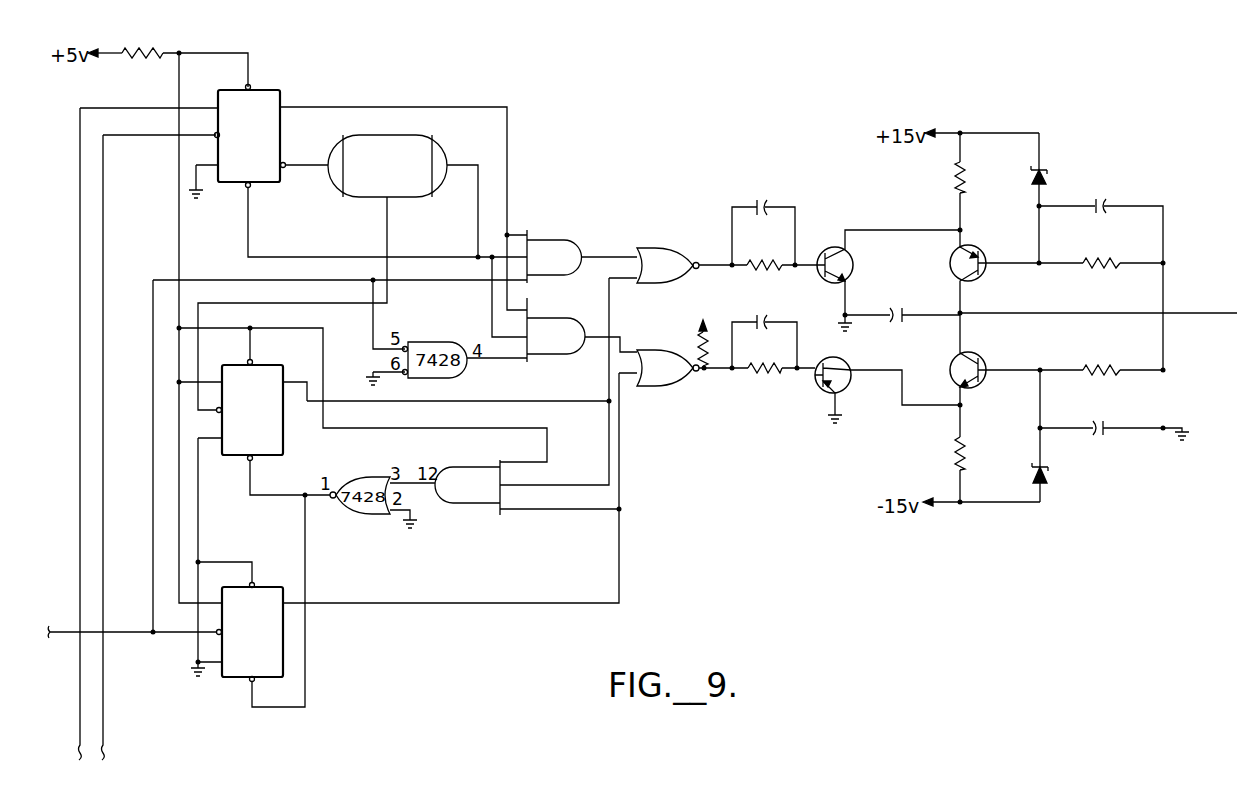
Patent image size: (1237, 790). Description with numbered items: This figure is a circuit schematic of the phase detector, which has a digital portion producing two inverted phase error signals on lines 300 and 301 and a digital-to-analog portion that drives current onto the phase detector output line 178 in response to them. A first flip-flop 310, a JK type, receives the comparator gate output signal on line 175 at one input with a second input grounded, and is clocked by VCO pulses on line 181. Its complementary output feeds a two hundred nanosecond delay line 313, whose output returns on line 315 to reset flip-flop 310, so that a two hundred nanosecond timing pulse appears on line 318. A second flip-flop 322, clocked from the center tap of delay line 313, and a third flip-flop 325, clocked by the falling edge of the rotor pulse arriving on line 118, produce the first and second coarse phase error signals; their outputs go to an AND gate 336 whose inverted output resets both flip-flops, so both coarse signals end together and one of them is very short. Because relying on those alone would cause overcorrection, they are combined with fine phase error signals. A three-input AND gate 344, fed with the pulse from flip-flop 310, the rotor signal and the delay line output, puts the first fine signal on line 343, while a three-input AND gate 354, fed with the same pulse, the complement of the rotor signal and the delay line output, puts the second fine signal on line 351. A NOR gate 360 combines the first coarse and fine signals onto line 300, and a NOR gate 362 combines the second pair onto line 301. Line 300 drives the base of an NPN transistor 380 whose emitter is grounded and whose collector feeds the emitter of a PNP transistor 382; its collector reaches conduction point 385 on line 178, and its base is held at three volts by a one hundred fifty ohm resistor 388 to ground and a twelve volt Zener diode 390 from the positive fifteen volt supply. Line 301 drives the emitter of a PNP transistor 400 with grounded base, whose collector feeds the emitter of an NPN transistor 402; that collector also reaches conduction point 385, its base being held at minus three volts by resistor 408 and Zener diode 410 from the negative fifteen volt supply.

The first flip-flop 310 is at (275, 90).
The 200 nanosecond delay line 313 is at (420, 140).
The line 315 is at (274, 257).
The line 318 is at (385, 107).
The line 175 is at (118, 108).
The line 181 is at (130, 135).
The three-input AND gate 344 is at (545, 240).
The line 343 is at (612, 250).
The NOR gate 360 is at (665, 248).
The line 300 is at (732, 268).
The line 301 is at (704, 372).
The three-input AND gate 354 is at (553, 318).
The line 351 is at (596, 342).
The NOR gate 362 is at (660, 388).
The NPN transistor 380 is at (830, 247).
The PNP transistor 382 is at (983, 258).
The conduction point 385 is at (958, 310).
The resistor 388 is at (1112, 260).
The Zener diode 390 is at (1050, 178).
The PNP transistor 400 is at (846, 360).
The NPN transistor 402 is at (985, 357).
The resistor 408 is at (1103, 366).
The Zener diode 410 is at (1035, 481).
The second flip-flop 322 is at (283, 440).
The third flip-flop 325 is at (279, 583).
The AND gate 336 is at (455, 467).
The line 118 is at (110, 632).
The phase detector output line 178 is at (1195, 313).